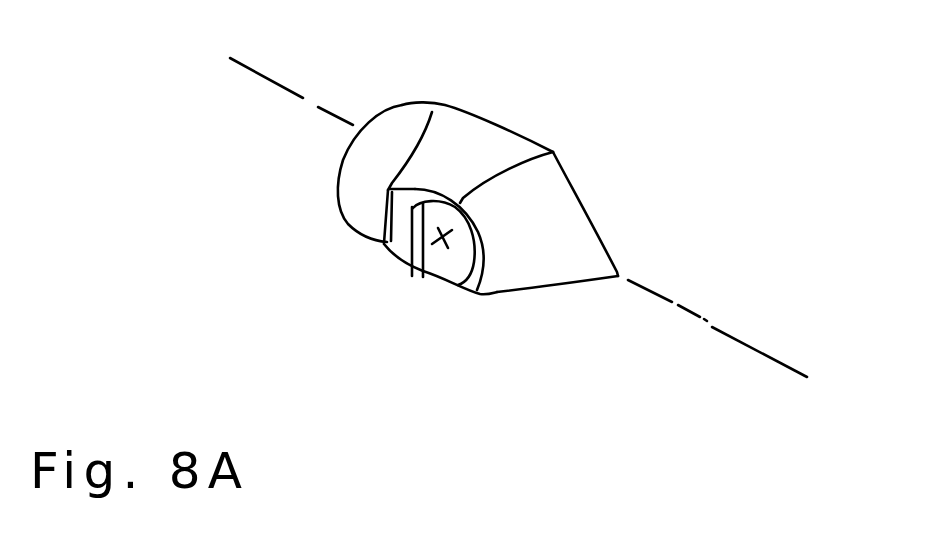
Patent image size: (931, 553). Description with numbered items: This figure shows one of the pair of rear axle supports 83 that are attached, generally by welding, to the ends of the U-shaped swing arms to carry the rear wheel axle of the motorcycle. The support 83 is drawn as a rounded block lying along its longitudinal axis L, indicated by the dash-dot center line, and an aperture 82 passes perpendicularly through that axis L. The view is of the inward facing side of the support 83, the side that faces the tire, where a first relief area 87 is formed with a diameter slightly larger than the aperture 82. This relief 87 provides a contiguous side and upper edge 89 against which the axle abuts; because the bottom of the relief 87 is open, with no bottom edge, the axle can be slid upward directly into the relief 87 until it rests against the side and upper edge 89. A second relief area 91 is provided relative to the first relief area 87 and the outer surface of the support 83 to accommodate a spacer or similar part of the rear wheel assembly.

The aperture 82 is at (433, 238).
The rear axle support 83 is at (473, 142).
The first relief area 87 is at (456, 268).
The contiguous side and upper edge 89 is at (414, 230).
The second relief area 91 is at (424, 194).
The longitudinal axis L is at (770, 354).